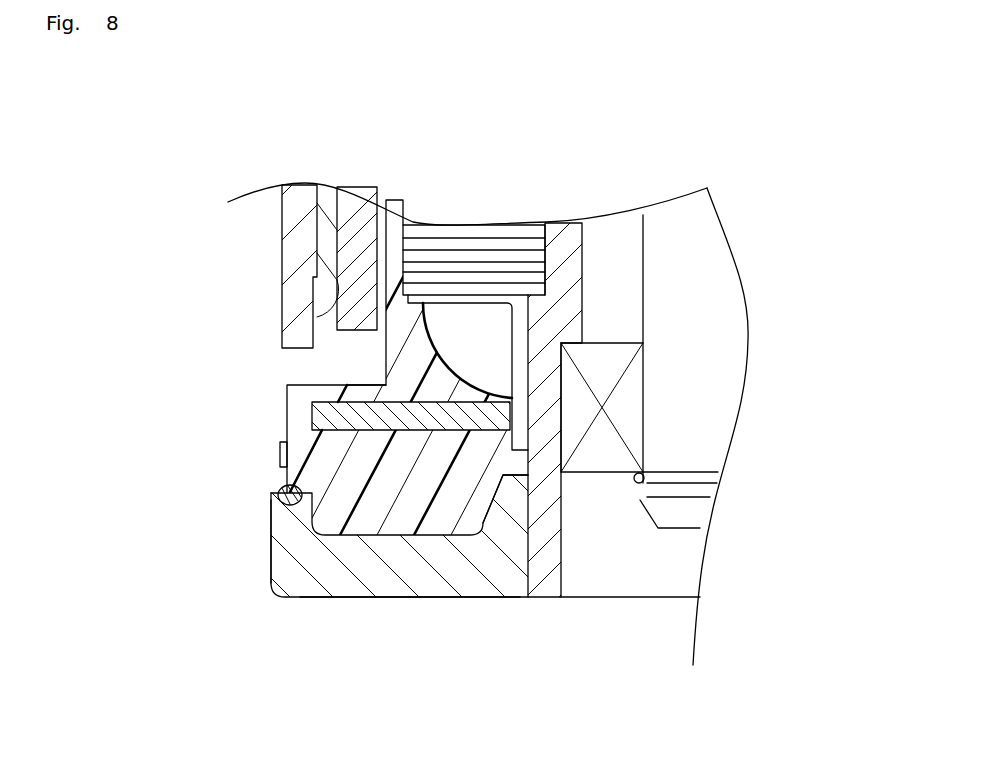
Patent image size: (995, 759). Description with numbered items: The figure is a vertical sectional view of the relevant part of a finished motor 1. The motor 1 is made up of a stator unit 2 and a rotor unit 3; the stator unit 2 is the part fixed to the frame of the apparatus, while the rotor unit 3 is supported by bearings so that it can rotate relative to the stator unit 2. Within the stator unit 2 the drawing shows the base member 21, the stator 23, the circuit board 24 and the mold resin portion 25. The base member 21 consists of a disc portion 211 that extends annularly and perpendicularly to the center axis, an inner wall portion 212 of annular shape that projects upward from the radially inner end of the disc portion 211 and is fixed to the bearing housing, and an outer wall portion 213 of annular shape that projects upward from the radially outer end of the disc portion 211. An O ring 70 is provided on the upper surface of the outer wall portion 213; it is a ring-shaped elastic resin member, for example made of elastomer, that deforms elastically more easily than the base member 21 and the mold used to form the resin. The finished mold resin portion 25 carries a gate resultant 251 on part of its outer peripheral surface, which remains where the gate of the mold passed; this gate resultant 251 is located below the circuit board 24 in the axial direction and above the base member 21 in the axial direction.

The motor 1 is at (600, 168).
The stator unit 2 is at (258, 604).
The rotor unit 3 is at (267, 265).
The base member 21 is at (500, 674).
The disc portion 211 is at (403, 565).
The inner wall portion 212 is at (290, 508).
The outer wall portion 213 is at (512, 505).
The stator 23 is at (472, 252).
The circuit board 24 is at (408, 398).
The mold resin portion 25 is at (297, 410).
The gate resultant 251 is at (281, 455).
The O ring 70 is at (279, 491).